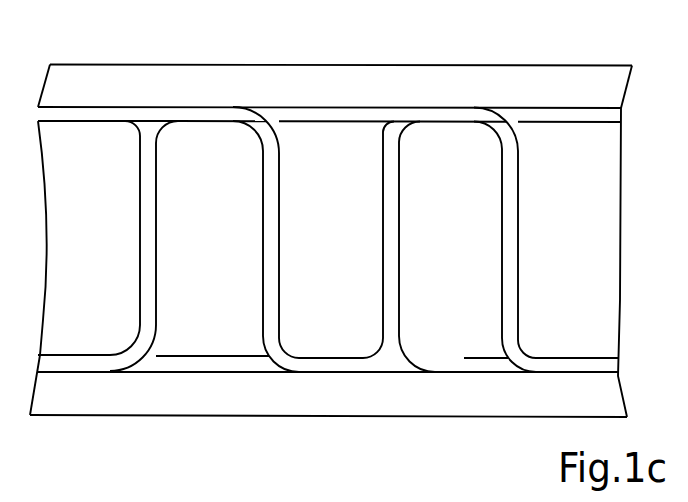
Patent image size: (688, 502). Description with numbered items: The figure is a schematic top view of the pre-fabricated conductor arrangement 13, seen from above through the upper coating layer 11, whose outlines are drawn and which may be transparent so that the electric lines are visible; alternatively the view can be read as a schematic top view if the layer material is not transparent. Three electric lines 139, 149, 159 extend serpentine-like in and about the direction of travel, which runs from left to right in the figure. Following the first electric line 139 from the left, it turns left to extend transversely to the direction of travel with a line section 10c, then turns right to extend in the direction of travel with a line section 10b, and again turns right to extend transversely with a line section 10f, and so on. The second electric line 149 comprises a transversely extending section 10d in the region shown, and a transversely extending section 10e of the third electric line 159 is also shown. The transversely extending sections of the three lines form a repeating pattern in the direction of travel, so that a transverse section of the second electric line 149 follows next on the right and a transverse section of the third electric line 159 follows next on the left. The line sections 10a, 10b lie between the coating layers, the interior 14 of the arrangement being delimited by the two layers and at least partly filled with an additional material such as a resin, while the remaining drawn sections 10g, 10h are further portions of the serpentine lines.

The electric line section 10a is at (322, 364).
The line section extending in the direction of travel 10b is at (325, 124).
The transversely extending line section 10c is at (140, 212).
The transversely extending section 10d is at (263, 213).
The transversely extending section 10e is at (382, 212).
The transversely extending line section 10f is at (519, 212).
The top portion of corrugated sheet 10g is at (207, 124).
The bottom portion of corrugated sheet 10h is at (182, 356).
The upper coating layer 11 is at (326, 86).
The conductor arrangement 13 is at (519, 273).
The interior 14 is at (263, 273).
The first electric line 139 is at (380, 107).
The second electric line 149 is at (80, 106).
The third electric line 159 is at (400, 274).